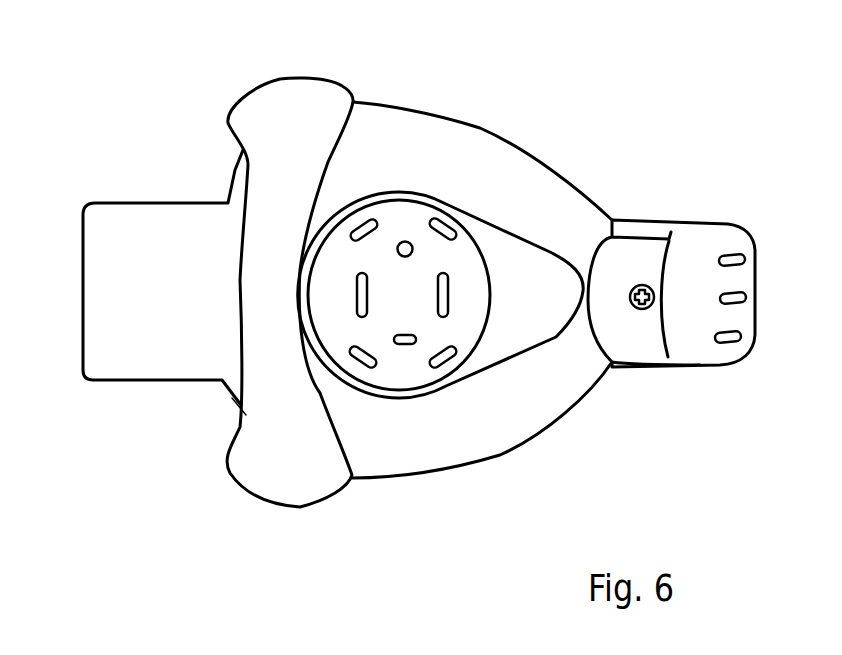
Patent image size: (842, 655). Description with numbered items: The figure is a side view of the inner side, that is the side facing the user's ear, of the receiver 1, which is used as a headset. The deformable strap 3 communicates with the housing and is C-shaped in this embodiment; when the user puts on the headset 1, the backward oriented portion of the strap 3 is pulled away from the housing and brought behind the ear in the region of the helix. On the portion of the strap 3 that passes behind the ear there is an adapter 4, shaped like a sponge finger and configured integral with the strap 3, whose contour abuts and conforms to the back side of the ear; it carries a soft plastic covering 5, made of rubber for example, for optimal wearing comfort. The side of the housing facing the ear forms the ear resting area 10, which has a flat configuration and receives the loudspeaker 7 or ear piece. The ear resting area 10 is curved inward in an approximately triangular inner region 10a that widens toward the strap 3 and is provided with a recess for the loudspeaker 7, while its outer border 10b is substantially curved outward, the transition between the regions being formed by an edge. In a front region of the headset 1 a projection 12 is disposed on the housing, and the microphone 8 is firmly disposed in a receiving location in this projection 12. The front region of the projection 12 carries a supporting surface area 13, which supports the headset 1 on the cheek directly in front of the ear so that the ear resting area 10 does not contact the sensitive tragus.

The receiver 1 is at (546, 64).
The strap 3 is at (125, 186).
The adapter 4 is at (238, 402).
The soft plastic covering 5 is at (283, 483).
The loudspeaker 7 is at (413, 373).
The microphone 8 is at (638, 310).
The ear resting area 10 is at (494, 432).
The inner region 10a is at (545, 287).
The outer border 10b is at (409, 225).
The projection 12 is at (697, 383).
The supporting surface area 13 is at (716, 243).